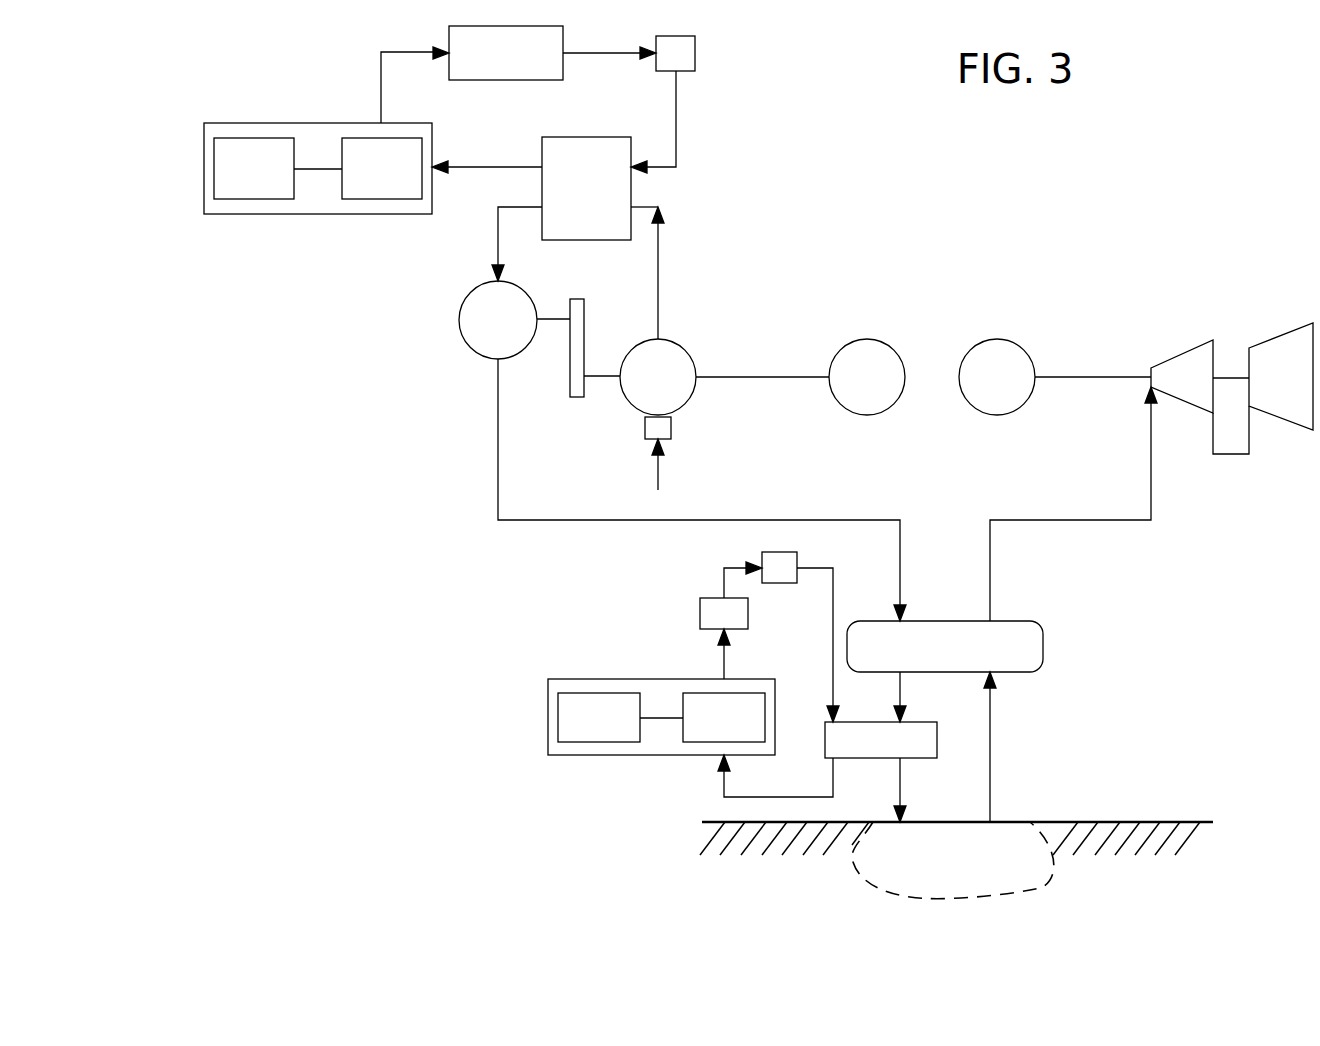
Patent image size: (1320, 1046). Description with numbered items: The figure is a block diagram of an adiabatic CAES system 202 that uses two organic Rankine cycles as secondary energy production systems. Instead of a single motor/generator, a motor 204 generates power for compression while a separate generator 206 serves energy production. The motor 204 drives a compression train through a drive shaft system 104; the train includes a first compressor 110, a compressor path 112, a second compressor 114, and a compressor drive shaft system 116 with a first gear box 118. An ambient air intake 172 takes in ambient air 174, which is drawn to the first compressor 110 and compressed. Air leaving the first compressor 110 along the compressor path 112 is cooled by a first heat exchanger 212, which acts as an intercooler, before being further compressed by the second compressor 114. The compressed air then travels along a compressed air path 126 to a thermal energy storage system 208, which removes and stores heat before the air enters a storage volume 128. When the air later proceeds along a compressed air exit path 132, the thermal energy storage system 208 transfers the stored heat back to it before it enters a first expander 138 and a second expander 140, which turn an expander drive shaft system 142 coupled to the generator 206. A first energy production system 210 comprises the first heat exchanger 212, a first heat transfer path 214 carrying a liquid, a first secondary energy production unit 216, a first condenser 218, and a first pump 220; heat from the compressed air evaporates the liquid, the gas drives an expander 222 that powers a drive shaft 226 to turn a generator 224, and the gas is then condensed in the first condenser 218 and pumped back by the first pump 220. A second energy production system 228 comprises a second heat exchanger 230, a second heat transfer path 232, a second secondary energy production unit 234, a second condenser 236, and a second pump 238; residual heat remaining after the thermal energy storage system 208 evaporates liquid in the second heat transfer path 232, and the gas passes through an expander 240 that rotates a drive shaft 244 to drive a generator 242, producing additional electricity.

The drive shaft system 104 is at (753, 377).
The first compressor 110 is at (635, 391).
The compressor path 112 is at (498, 222).
The second compressor 114 is at (475, 334).
The compressor drive shaft system 116 is at (552, 390).
The first gear box 118 is at (585, 392).
The compressed air path 126 is at (520, 522).
The storage volume 128 is at (926, 878).
The compressed air exit path 132 is at (1097, 522).
The first expander 138 is at (1161, 392).
The second expander 140 is at (1259, 392).
The expander drive shaft system 142 is at (1070, 377).
The ambient air intake 172 is at (672, 425).
The ambient air 174 is at (690, 475).
The adiabatic CAES system 202 is at (1066, 195).
The motor 204 is at (844, 391).
The generator 206 is at (974, 391).
The thermal energy storage system 208 is at (922, 661).
The first energy production system 210 is at (752, 92).
The first heat exchanger 212 is at (563, 202).
The first heat transfer path 214 is at (381, 72).
The first secondary energy production unit 216 is at (304, 216).
The first condenser 218 is at (483, 67).
The first pump 220 is at (697, 41).
The expander 222 is at (359, 182).
The generator 224 is at (231, 182).
The drive shaft 226 is at (314, 169).
The second energy production system 228 is at (643, 598).
The second heat exchanger 230 is at (857, 754).
The second heat transfer path 232 is at (734, 564).
The second secondary energy production unit 234 is at (662, 757).
The second condenser 236 is at (700, 607).
The second pump 238 is at (797, 556).
The expander 240 is at (699, 732).
The generator 242 is at (575, 732).
The drive shaft 244 is at (656, 718).